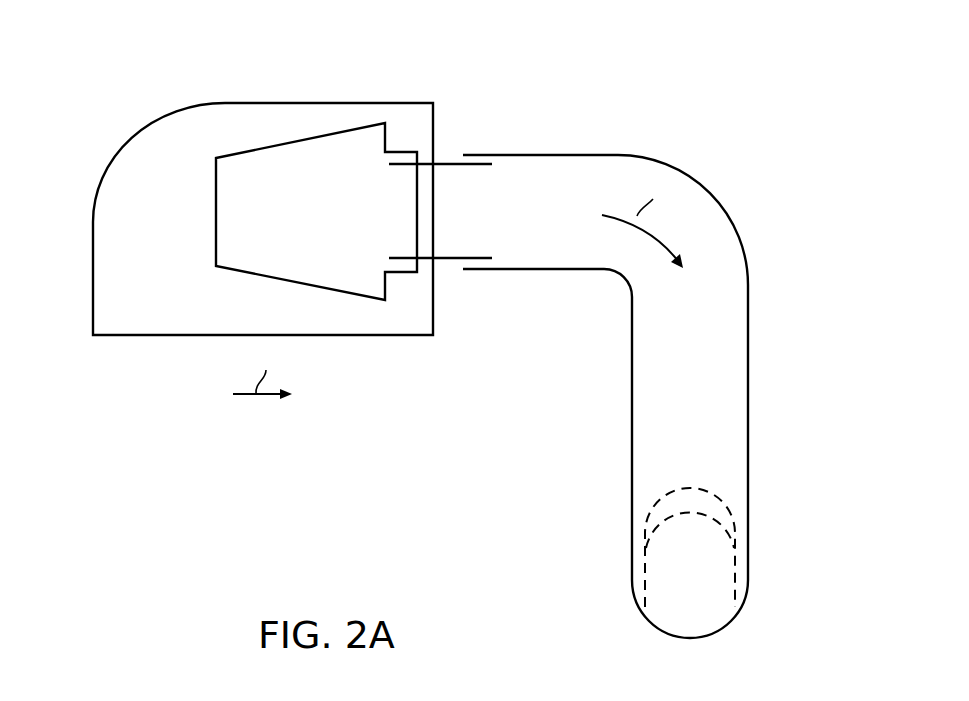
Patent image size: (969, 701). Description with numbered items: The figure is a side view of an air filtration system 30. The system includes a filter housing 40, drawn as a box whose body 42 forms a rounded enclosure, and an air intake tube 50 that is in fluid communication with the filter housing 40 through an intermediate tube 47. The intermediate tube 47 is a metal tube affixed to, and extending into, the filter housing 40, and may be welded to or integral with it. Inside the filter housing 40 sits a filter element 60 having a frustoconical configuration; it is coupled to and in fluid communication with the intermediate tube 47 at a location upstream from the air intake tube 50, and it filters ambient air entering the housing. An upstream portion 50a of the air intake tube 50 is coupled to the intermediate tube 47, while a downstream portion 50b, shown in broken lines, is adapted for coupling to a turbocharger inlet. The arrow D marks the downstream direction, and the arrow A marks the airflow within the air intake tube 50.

The air filtration system 30 is at (732, 99).
The filter housing 40 is at (134, 90).
The housing body 42 is at (172, 305).
The intermediate tube 47 is at (449, 271).
The air intake tube 50 is at (750, 331).
The upstream portion 50a is at (476, 154).
The downstream portion 50b is at (695, 487).
The filter element 60 is at (323, 228).